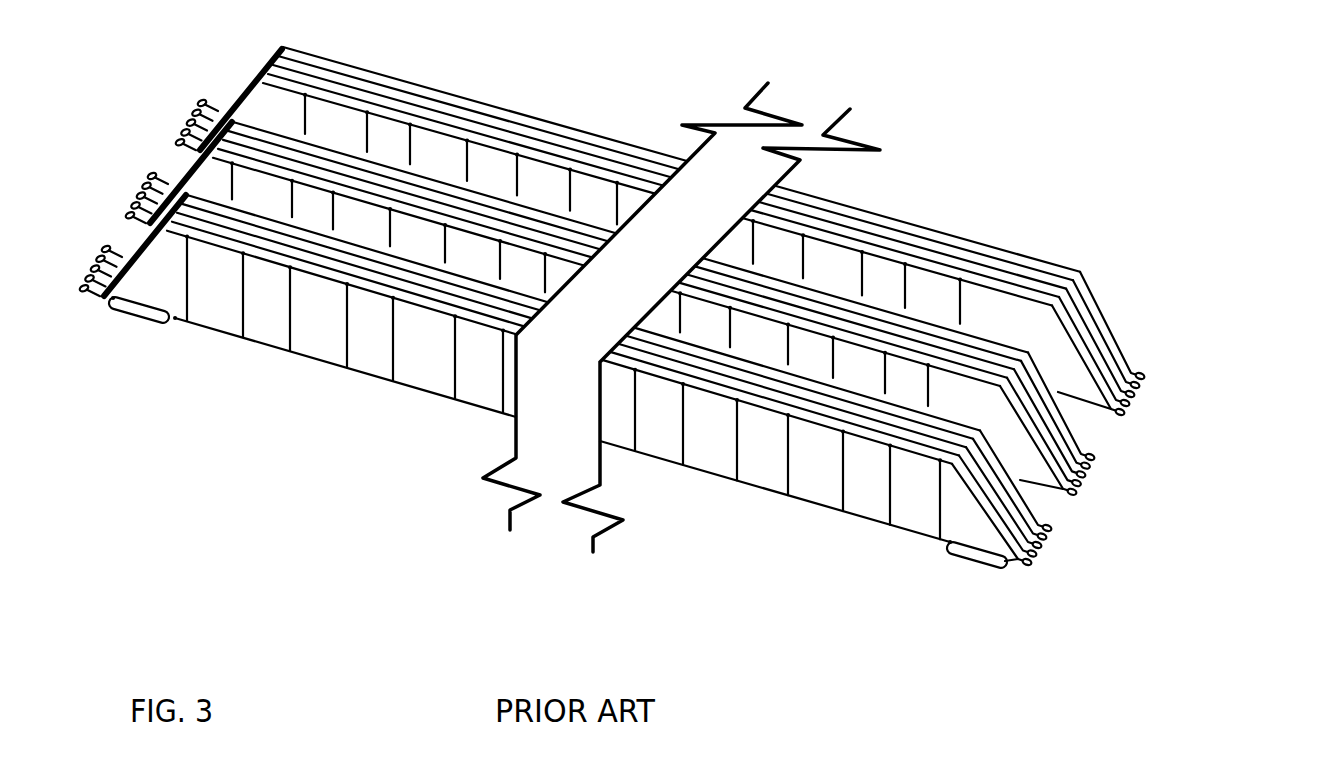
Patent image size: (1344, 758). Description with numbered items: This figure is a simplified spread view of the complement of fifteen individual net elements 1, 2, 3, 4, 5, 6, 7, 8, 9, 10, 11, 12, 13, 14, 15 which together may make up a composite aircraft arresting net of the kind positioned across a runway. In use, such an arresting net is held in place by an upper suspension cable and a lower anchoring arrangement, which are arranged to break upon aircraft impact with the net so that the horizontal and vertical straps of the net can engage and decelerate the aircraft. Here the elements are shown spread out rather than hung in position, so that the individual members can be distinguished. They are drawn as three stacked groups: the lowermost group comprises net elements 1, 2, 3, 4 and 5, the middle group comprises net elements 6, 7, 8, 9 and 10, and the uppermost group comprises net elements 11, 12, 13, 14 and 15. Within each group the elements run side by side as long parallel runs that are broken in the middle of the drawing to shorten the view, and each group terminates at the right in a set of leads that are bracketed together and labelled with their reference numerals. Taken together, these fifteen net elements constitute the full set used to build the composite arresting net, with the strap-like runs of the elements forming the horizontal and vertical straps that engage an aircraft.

The net element 1 is at (1011, 608).
The net element 2 is at (1022, 590).
The net element 3 is at (1065, 527).
The net element 4 is at (1044, 553).
The net element 5 is at (1055, 536).
The net element 6 is at (1083, 484).
The net element 7 is at (1093, 468).
The net element 8 is at (1107, 452).
The net element 9 is at (1116, 433).
The net element 10 is at (1128, 413).
The net element 11 is at (1157, 361).
The net element 12 is at (1167, 352).
The net element 13 is at (1153, 368).
The net element 14 is at (1189, 334).
The net element 15 is at (1200, 326).